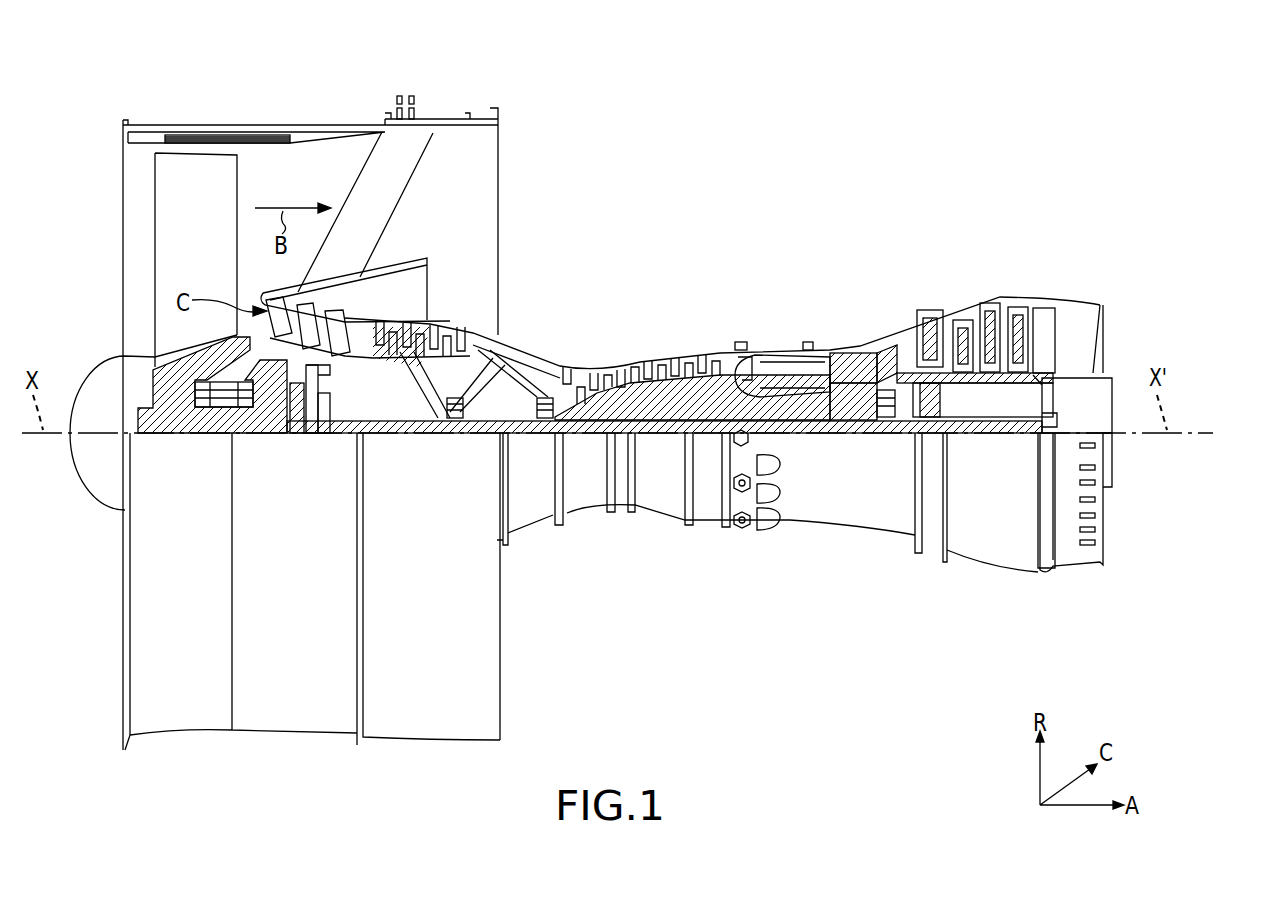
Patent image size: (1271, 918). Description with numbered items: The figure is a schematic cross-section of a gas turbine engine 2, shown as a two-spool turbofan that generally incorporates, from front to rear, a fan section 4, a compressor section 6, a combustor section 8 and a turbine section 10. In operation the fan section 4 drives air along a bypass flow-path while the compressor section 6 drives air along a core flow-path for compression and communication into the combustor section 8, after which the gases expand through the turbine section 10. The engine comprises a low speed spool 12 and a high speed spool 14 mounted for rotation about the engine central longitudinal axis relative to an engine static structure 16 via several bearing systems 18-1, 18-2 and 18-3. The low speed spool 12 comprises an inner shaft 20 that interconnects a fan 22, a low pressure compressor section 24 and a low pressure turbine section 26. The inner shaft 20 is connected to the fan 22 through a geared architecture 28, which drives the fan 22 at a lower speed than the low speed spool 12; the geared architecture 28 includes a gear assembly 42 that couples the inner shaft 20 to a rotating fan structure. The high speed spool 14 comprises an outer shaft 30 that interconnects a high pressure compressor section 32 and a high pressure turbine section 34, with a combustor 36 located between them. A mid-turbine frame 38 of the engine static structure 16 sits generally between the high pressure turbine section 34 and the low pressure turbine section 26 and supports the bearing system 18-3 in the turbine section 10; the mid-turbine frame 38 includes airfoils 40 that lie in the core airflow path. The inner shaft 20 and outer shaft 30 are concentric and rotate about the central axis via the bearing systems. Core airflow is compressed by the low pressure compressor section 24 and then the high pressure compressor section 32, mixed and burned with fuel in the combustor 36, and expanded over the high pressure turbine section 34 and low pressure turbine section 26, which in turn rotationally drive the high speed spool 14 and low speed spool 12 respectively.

The gas turbine engine 2 is at (823, 178).
The fan section 4 is at (355, 103).
The compressor section 6 is at (363, 235).
The combustor section 8 is at (730, 235).
The turbine section 10 is at (1043, 235).
The low speed spool 12 is at (668, 438).
The high speed spool 14 is at (703, 392).
The engine static structure 16 is at (275, 720).
The bearing system 18-1 is at (205, 408).
The bearing system 18-2 is at (453, 424).
The bearing system 18-3 is at (893, 431).
The inner shaft 20 is at (521, 434).
The fan 22 is at (180, 256).
The low pressure compressor section 24 is at (432, 329).
The low pressure turbine section 26 is at (980, 317).
The geared architecture 28 is at (327, 438).
The outer shaft 30 is at (782, 414).
The high pressure compressor section 32 is at (643, 405).
The high pressure turbine section 34 is at (852, 345).
The combustor 36 is at (777, 368).
The mid-turbine frame 38 is at (898, 372).
The airfoils 40 is at (897, 368).
The gear assembly 42 is at (322, 377).